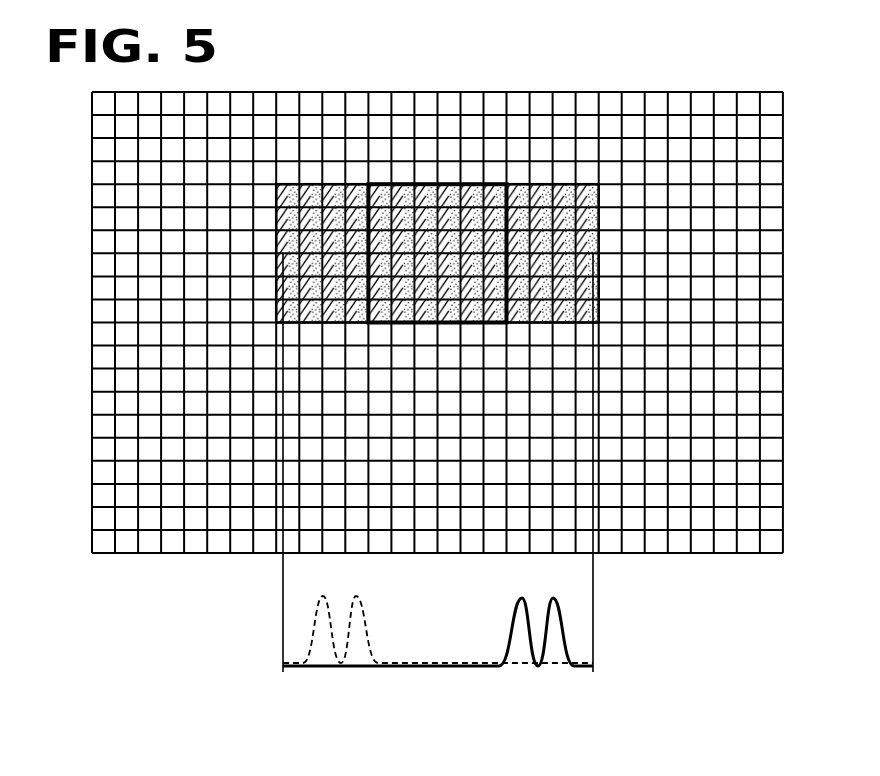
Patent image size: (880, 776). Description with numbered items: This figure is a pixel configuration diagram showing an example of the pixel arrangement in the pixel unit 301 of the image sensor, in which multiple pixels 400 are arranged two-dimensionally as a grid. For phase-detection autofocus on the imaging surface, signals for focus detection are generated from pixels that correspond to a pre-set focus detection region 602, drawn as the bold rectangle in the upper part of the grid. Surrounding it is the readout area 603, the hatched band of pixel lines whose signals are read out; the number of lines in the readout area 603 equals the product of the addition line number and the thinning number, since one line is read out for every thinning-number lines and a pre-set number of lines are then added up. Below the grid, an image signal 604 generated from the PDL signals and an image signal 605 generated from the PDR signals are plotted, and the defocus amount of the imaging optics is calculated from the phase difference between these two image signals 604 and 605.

The pixel unit 301 is at (611, 66).
The pixel 400 is at (725, 103).
The focus detection region 602 is at (422, 183).
The readout area 603 is at (293, 183).
The image signal 604 is at (357, 595).
The image signal 605 is at (520, 598).